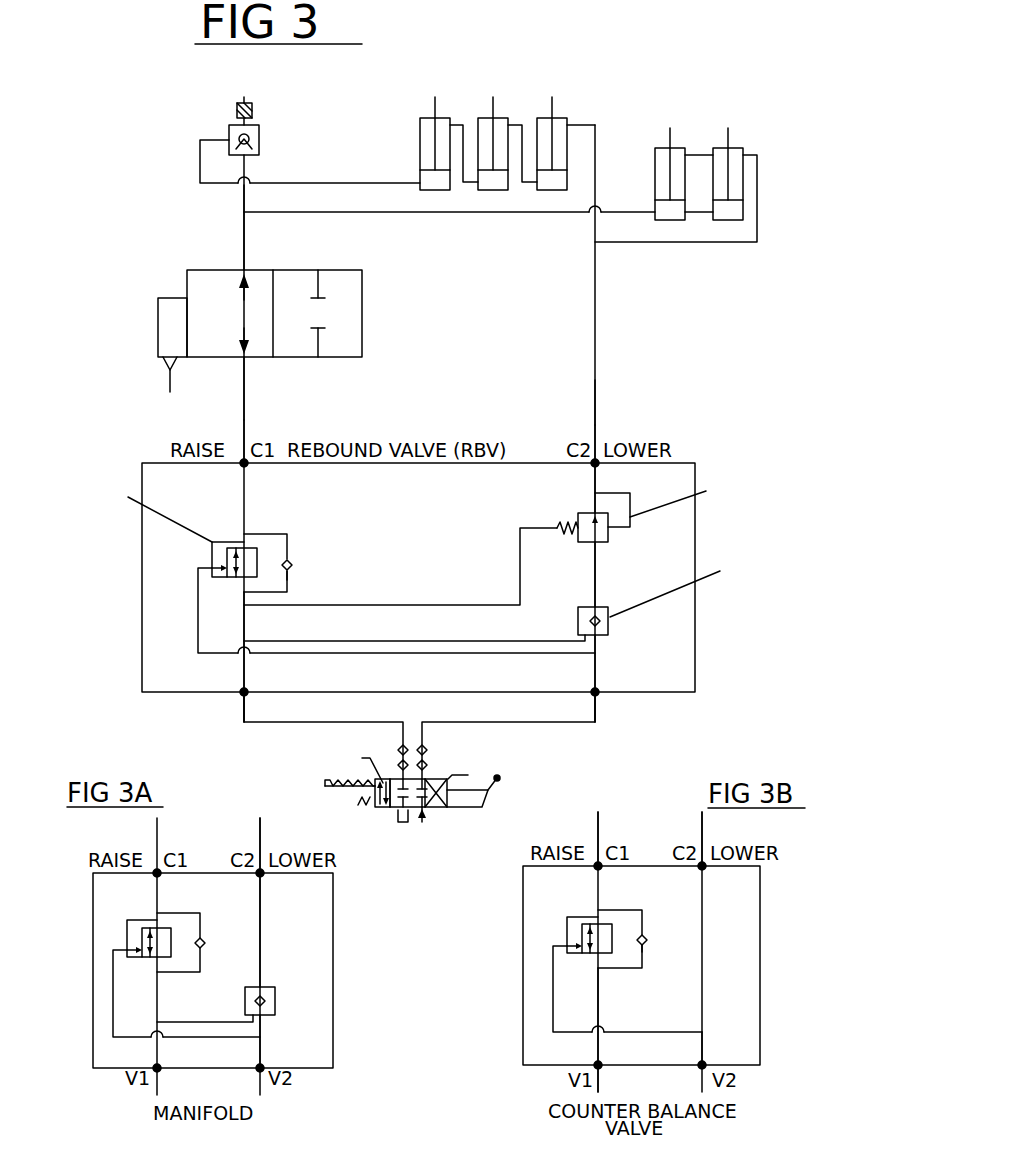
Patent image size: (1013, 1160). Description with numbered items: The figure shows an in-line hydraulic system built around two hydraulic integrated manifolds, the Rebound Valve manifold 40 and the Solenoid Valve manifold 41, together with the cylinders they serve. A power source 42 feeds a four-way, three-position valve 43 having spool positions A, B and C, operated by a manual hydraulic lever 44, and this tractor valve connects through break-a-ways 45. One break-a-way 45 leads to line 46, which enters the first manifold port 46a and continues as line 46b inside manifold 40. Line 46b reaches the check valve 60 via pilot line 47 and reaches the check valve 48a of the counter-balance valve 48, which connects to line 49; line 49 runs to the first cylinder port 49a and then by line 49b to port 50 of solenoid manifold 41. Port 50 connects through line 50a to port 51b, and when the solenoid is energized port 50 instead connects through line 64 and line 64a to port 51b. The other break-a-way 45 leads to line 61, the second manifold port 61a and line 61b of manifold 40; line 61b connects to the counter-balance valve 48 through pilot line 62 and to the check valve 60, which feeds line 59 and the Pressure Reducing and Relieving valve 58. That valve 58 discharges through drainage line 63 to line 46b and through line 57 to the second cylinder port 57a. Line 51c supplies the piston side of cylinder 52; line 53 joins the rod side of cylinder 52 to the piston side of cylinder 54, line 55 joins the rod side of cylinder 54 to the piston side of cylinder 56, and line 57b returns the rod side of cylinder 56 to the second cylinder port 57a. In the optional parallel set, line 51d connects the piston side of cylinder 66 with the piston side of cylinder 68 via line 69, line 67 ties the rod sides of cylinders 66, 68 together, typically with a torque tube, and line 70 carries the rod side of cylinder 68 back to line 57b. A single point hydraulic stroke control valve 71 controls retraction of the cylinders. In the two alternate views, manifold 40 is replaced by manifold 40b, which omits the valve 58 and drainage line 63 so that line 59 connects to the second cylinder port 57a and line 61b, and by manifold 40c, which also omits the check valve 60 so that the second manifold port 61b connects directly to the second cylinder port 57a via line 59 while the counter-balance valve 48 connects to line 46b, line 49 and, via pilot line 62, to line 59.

In FIG. 3, the Rebound Valve manifold 40 is at (450, 587).
In FIG. 3A, the manifold 40b is at (266, 970).
In FIG. 3B, the manifold 40c is at (697, 965).
In FIG. 3, the Solenoid Valve manifold 41 is at (333, 323).
In FIG. 3, the power source 42 is at (441, 835).
In FIG. 3, the four way, three position valve 43 is at (367, 808).
In FIG. 3, the manual hydraulic lever 44 is at (486, 784).
In FIG. 3, the break-a-ways 45 is at (411, 746).
In FIG. 3, the line 46 is at (291, 735).
In FIG. 3, the port V1 46a is at (197, 715).
In FIG. 3B, the port V1 46a is at (633, 1080).
In FIG. 3, the line 46b is at (209, 642).
In FIG. 3B, the line 46b is at (564, 1016).
In FIG. 3, the pilot line 47 is at (414, 657).
In FIG. 3, the counter-balance valve 48 is at (293, 557).
In FIG. 3B, the counter-balance valve 48 is at (648, 931).
In FIG. 3, the check valve of the counter-balance valve 48a is at (316, 586).
In FIG. 3B, the check valve of the counter-balance valve 48a is at (671, 958).
In FIG. 3, the line 49 is at (158, 534).
In FIG. 3B, the line 49 is at (595, 923).
In FIG. 3, the port C1 49a is at (285, 434).
In FIG. 3B, the port C1 49a is at (633, 839).
In FIG. 3, the line 49b is at (281, 388).
In FIG. 3, the port 50 is at (203, 374).
In FIG. 3, the line 50a is at (200, 323).
In FIG. 3, the port 51b is at (213, 227).
In FIG. 3, the line 51c is at (362, 180).
In FIG. 3, the line 51d is at (449, 230).
In FIG. 3, the cylinder 52 is at (436, 132).
In FIG. 3, the line 53 is at (471, 117).
In FIG. 3, the cylinder 54 is at (496, 132).
In FIG. 3, the line 55 is at (531, 117).
In FIG. 3, the cylinder 56 is at (554, 132).
In FIG. 3, the line 57 is at (597, 478).
In FIG. 3, the port C2 57a is at (628, 441).
In FIG. 3A, the port C2 57a is at (294, 840).
In FIG. 3B, the port C2 57a is at (738, 839).
In FIG. 3, the line 57b is at (628, 402).
In FIG. 3, the Pressure Reducing and Relieving valve 58 is at (711, 510).
In FIG. 3, the line 59 is at (615, 574).
In FIG. 3A, the line 59 is at (281, 930).
In FIG. 3, the check valve 60 is at (683, 593).
In FIG. 3A, the check valve 60 is at (324, 1005).
In FIG. 3, the line 61 is at (535, 735).
In FIG. 3, the port V2 61a is at (639, 723).
In FIG. 3, the line 61b is at (625, 663).
In FIG. 3A, the line 61b is at (289, 1041).
In FIG. 3B, the line 61b is at (729, 1048).
In FIG. 3, the pilot line 62 is at (396, 623).
In FIG. 3B, the pilot line 62 is at (627, 1003).
In FIG. 3, the drainage line 63 is at (411, 575).
In FIG. 3, the line 64 is at (345, 362).
In FIG. 3, the line 64a is at (352, 271).
In FIG. 3, the cylinder 66 is at (666, 160).
In FIG. 3, the line 67 is at (718, 127).
In FIG. 3, the cylinder 68 is at (747, 165).
In FIG. 3, the line 69 is at (719, 240).
In FIG. 3, the line 70 is at (676, 215).
In FIG. 3, the single point hydraulic stroke control valve 71 is at (257, 143).